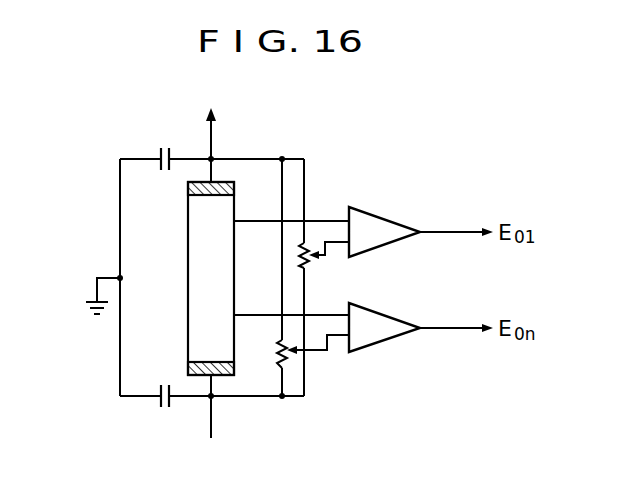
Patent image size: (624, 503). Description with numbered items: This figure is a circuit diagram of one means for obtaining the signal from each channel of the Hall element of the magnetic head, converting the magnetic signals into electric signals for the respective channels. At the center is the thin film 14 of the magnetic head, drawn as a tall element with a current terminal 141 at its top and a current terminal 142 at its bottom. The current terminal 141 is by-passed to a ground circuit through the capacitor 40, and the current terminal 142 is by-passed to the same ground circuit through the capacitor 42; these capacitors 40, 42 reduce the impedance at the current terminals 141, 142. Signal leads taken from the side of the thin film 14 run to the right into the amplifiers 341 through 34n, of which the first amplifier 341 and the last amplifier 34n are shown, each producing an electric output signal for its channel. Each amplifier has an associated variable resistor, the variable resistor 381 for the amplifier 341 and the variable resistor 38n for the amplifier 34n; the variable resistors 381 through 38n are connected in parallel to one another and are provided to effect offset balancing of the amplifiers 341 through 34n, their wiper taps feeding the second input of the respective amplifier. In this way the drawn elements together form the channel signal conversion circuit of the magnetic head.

The thin film 14 is at (209, 283).
The current terminal 141 is at (228, 182).
The current terminal 142 is at (232, 378).
The capacitor 40 is at (161, 157).
The capacitor 42 is at (162, 401).
The amplifier 341 is at (390, 217).
The amplifier 34n is at (390, 292).
The variable resistor 381 is at (312, 262).
The variable resistor 38n is at (291, 357).